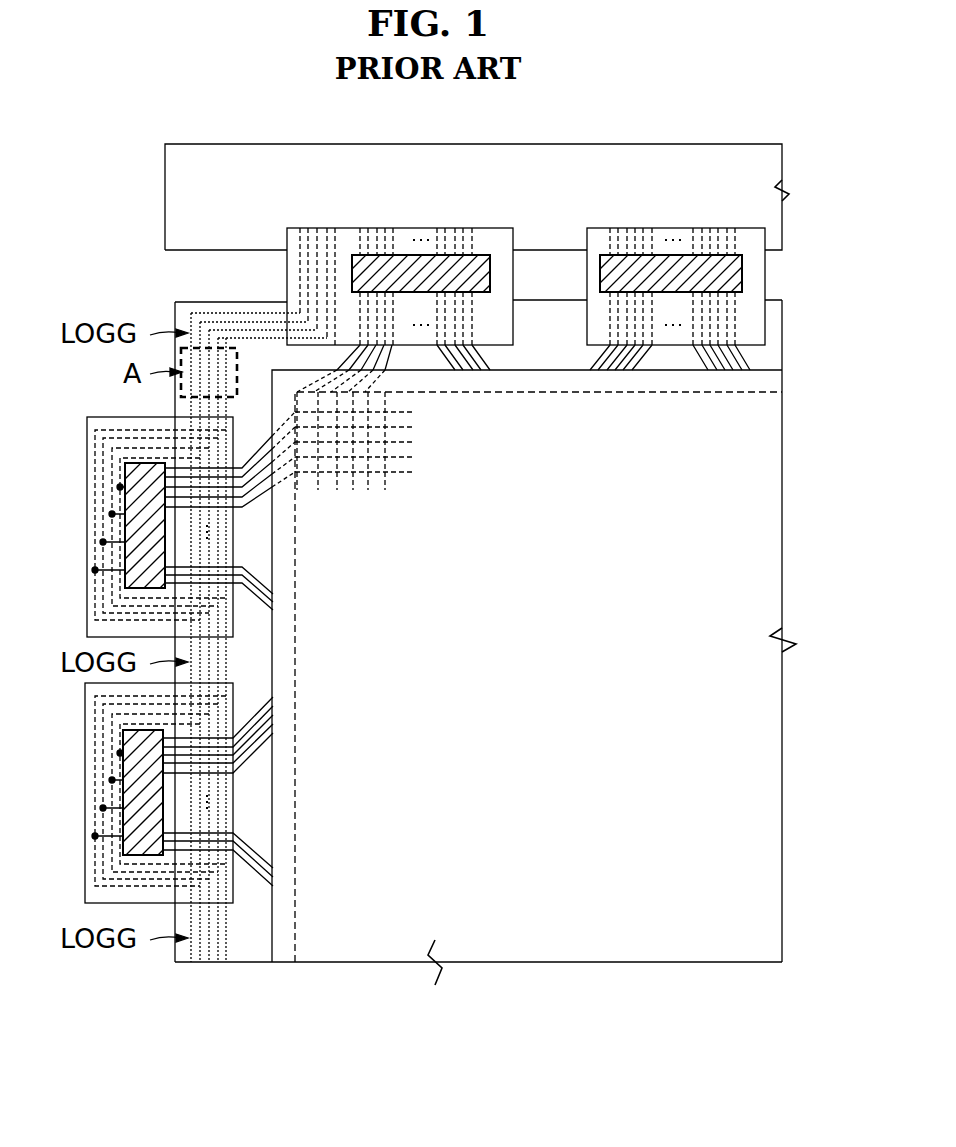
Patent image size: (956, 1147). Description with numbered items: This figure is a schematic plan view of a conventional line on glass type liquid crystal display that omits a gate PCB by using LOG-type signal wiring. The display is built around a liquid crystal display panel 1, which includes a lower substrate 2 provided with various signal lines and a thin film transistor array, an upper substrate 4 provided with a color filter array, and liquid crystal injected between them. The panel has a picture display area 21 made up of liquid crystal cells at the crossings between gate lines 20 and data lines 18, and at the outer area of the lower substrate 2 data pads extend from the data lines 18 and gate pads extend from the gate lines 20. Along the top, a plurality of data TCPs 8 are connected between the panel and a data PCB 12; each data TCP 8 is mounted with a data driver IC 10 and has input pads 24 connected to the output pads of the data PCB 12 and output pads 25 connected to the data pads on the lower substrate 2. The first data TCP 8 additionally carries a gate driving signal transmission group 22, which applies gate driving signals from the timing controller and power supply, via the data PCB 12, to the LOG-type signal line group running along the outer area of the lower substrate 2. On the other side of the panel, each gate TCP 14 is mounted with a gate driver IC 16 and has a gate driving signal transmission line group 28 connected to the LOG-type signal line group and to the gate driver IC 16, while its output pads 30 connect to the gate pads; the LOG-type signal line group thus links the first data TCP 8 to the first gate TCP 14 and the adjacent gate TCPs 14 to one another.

The liquid crystal display panel 1 is at (788, 523).
The lower substrate 2 is at (784, 334).
The upper substrate 4 is at (784, 389).
The data TCP 8 is at (763, 294).
The data driver IC 10 is at (745, 268).
The data PCB 12 is at (785, 200).
The gate TCP 14 is at (88, 531).
The gate driver IC 16 is at (124, 510).
The data lines 18 is at (354, 487).
The gate lines 20 is at (400, 442).
The picture display area 21 is at (604, 658).
The gate driving signal transmission group 22 is at (290, 268).
The input pads 24 is at (454, 253).
The output pads 25 is at (480, 328).
The gate driving signal transmission line group 28 is at (87, 475).
The output pads 30 is at (230, 476).